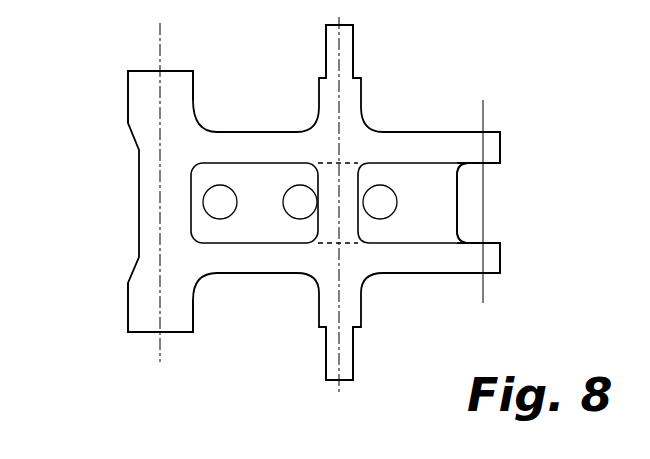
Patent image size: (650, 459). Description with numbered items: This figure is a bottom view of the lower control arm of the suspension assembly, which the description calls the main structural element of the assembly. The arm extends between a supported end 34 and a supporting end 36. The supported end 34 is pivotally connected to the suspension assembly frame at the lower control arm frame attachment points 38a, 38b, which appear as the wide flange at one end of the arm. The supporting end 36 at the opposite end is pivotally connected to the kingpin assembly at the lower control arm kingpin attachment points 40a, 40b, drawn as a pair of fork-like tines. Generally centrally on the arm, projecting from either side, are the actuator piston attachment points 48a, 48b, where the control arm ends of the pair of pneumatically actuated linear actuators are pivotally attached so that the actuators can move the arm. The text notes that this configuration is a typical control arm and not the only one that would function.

The supported end 34 is at (138, 203).
The supporting end 36 is at (501, 252).
The lower control arm frame attachment point 38a is at (150, 335).
The lower control arm frame attachment point 38b is at (150, 70).
The lower control arm kingpin attachment point 40a is at (483, 277).
The lower control arm kingpin attachment point 40b is at (483, 130).
The actuator piston attachment point 48a is at (332, 383).
The actuator piston attachment point 48b is at (332, 25).